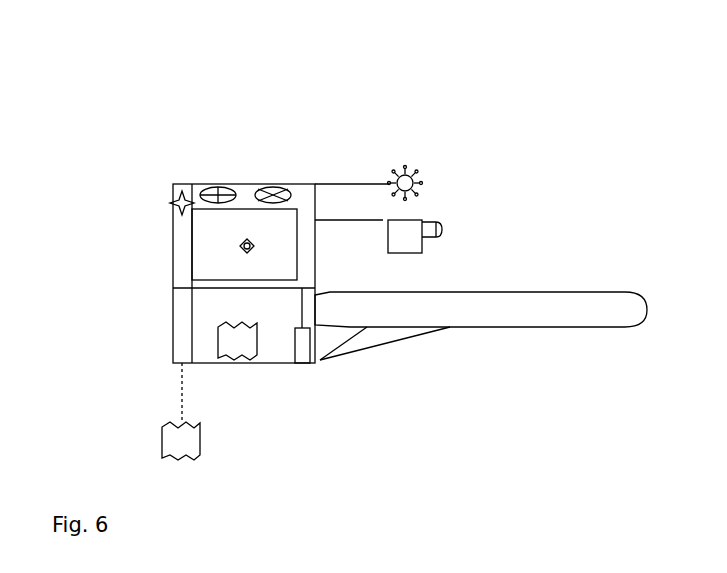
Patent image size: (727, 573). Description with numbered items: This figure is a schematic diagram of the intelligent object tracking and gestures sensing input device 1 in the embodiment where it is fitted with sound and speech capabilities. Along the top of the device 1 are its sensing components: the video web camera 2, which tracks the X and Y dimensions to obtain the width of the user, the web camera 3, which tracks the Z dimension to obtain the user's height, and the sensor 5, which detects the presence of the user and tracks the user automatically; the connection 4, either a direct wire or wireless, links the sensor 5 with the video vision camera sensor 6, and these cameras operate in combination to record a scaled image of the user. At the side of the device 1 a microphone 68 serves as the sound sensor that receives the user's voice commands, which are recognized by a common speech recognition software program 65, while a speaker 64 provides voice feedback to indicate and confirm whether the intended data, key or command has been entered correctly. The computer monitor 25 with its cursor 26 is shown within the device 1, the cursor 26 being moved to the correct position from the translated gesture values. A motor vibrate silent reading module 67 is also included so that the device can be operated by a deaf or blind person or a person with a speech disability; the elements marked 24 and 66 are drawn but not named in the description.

The intelligent object tracking and gestures sensing input device 1 is at (181, 172).
The video web camera 2 is at (219, 172).
The web camera 3 is at (274, 172).
The connection 4 is at (370, 212).
The sensor 5 is at (404, 154).
The video vision camera sensor 6 is at (441, 206).
The microphone 68 is at (162, 200).
The cursor 26 is at (221, 237).
The computer monitor 25 is at (191, 273).
The lower chamber 24 is at (191, 315).
The motor vibrate silent reading module 67 is at (202, 345).
The outlet path 66 is at (191, 389).
The speech recognition software program 65 is at (312, 379).
The speaker 64 is at (477, 341).